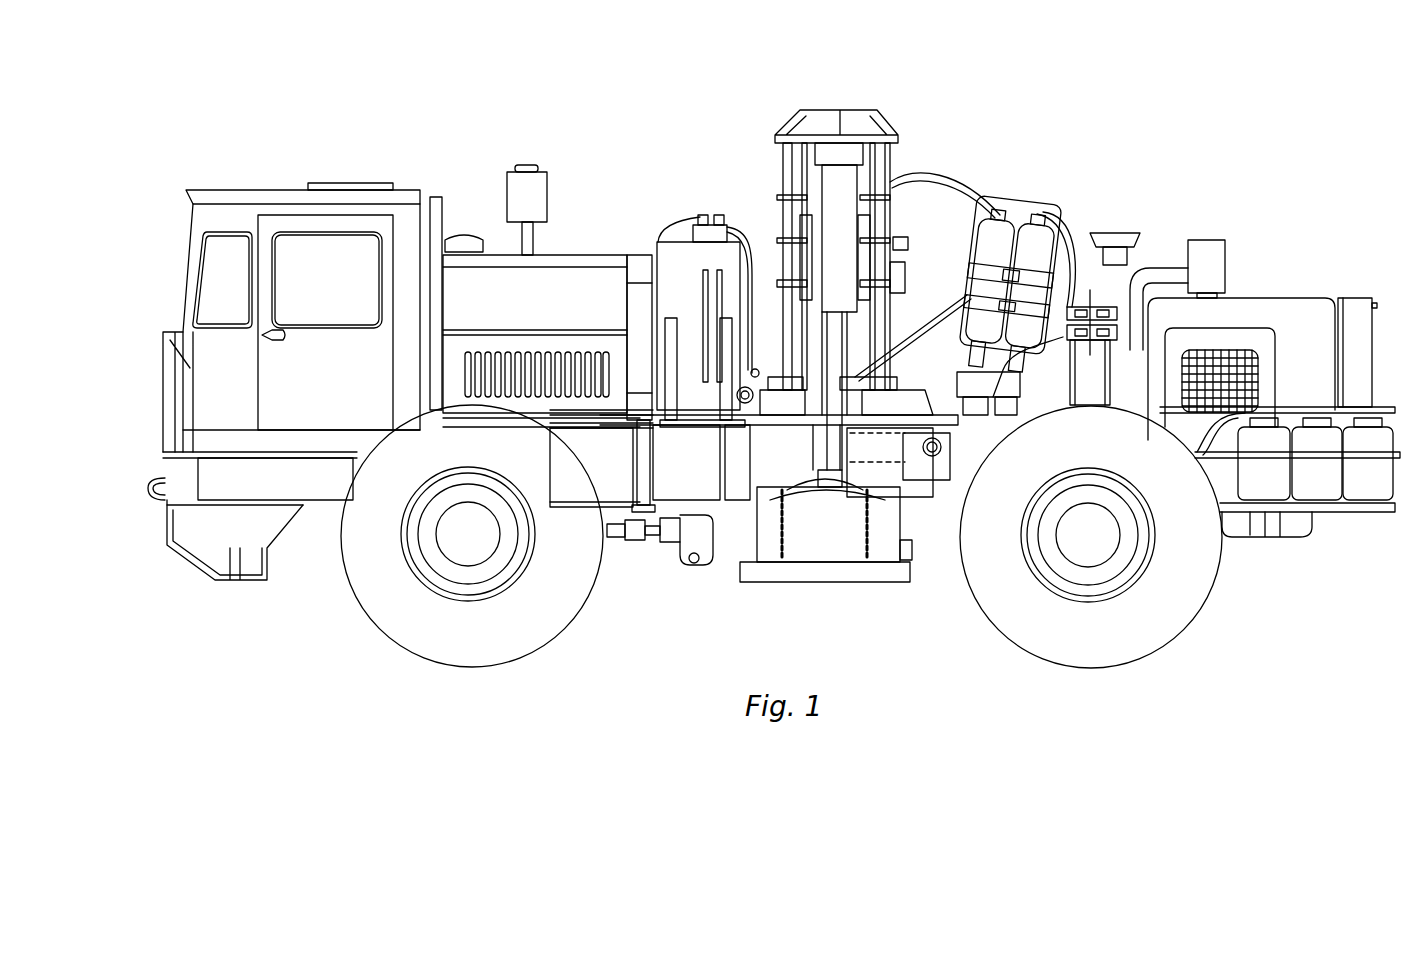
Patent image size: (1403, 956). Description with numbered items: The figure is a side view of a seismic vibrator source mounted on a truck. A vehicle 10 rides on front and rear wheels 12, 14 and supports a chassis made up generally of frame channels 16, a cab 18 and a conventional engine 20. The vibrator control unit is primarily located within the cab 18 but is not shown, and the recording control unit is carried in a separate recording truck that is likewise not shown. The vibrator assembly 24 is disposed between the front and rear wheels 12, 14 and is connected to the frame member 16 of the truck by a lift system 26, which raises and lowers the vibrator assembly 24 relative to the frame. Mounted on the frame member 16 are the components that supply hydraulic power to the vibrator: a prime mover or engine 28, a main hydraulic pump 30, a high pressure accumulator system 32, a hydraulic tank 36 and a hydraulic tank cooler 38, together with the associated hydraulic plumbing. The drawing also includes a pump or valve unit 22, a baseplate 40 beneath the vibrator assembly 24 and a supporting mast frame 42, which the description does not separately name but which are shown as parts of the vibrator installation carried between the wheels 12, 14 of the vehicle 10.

The vehicle 10 is at (330, 130).
The front wheels 12 is at (340, 545).
The rear wheels 14 is at (1215, 568).
The frame channels 16 is at (610, 495).
The cab 18 is at (260, 190).
The engine 20 is at (500, 275).
The pump 22 is at (910, 547).
The vibrator assembly 24 is at (847, 96).
The lift system 26 is at (848, 190).
The prime mover or engine 28 is at (1275, 303).
The main hydraulic pump 30 is at (1093, 388).
The high pressure accumulator system 32 is at (1040, 248).
The hydraulic tank 36 is at (654, 250).
The hydraulic tank cooler 38 is at (1357, 303).
The baseplate 40 is at (866, 580).
The mast frame 42 is at (786, 183).